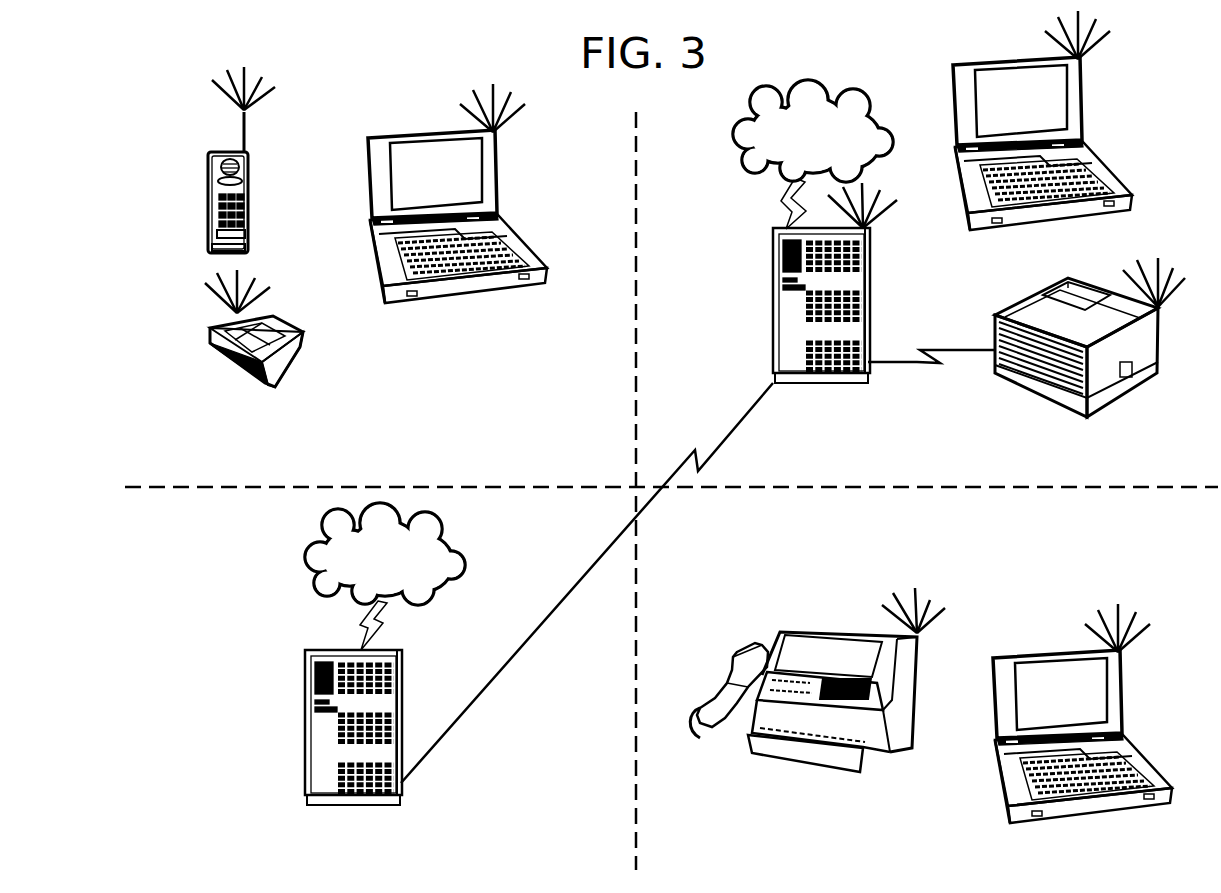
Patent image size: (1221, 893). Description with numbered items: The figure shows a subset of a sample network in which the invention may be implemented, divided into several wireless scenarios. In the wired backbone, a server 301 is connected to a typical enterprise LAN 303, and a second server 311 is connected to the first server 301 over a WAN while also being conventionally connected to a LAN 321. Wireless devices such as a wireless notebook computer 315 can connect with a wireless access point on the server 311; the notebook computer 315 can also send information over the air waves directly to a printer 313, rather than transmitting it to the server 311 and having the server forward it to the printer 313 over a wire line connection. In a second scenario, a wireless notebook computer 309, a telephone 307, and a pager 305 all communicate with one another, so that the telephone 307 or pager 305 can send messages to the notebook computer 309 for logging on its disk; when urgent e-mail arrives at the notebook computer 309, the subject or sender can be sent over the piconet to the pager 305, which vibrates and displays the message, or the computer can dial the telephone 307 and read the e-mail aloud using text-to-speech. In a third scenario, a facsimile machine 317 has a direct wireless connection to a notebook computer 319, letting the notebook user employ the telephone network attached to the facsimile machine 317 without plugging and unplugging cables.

The server 301 is at (330, 727).
The enterprise LAN 303 is at (362, 554).
The pager 305 is at (240, 329).
The telephone 307 is at (217, 160).
The wireless notebook computer 309 is at (432, 193).
The second server 311 is at (811, 283).
The printer 313 is at (1100, 337).
The wireless notebook computer 315 is at (1044, 120).
The facsimile machine 317 is at (817, 680).
The notebook computer 319 is at (1082, 713).
The LAN 321 is at (813, 125).